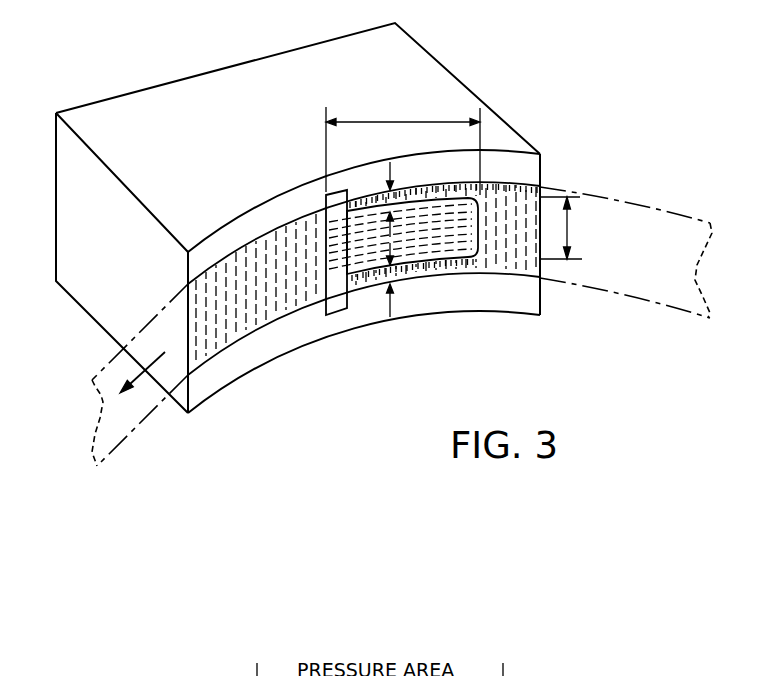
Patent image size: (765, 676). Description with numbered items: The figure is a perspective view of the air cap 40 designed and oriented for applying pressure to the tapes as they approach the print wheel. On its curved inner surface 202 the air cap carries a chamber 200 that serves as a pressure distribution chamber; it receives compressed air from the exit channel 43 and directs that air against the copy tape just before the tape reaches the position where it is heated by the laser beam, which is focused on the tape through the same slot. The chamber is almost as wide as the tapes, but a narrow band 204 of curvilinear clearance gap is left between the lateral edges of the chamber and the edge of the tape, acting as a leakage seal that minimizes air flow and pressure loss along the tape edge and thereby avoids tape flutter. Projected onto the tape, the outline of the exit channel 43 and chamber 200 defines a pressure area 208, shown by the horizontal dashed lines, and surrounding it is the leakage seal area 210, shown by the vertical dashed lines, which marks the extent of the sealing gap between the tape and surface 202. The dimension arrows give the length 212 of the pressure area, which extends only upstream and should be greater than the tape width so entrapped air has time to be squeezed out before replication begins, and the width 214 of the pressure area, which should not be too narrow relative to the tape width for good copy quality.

The curved housing block 40 is at (419, 40).
The exit channel 43 is at (337, 313).
The chamber 200 is at (427, 203).
The curved inner surface 202 is at (494, 300).
The narrow band of clearance gap 204 is at (395, 200).
The pressure area 208 is at (445, 212).
The leakage seal area 210 is at (277, 290).
The length of the pressure area 212 is at (418, 116).
The width of the pressure area 214 is at (568, 225).